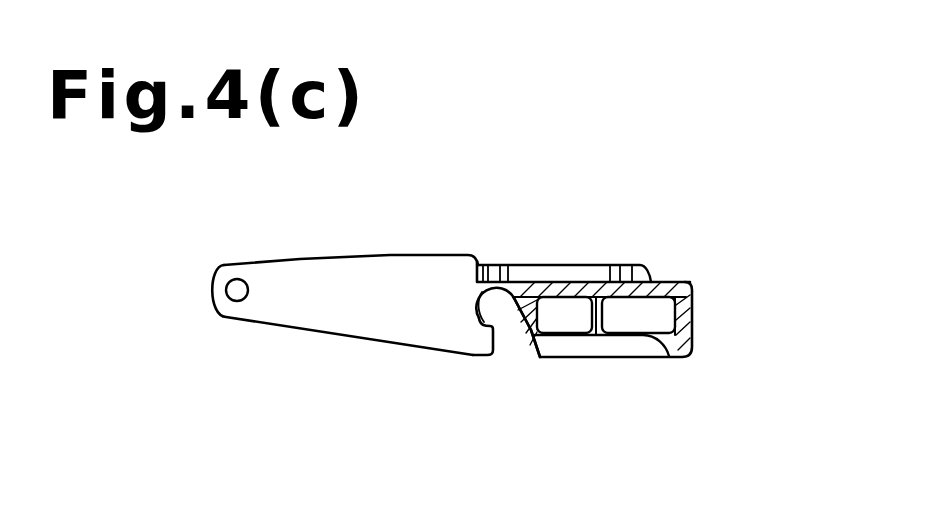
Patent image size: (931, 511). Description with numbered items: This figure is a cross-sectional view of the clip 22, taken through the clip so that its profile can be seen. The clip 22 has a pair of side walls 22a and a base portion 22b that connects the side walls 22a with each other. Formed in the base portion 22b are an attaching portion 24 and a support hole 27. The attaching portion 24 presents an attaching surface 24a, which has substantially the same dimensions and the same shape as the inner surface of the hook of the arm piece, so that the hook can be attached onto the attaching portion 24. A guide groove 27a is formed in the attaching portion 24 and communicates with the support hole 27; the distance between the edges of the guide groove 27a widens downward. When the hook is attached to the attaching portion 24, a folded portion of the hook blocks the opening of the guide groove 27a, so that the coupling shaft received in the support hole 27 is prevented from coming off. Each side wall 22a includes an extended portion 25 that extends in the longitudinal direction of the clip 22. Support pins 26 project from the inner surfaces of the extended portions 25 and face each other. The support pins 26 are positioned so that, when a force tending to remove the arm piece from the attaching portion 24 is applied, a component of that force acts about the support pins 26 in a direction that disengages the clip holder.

The clip 22 is at (688, 282).
The side wall 22a is at (348, 318).
The base portion 22b is at (692, 308).
The attaching portion 24 is at (535, 282).
The attaching surface 24a is at (472, 312).
The extended portion 25 is at (345, 262).
The support pin 26 is at (250, 292).
The support hole 27 is at (483, 326).
The guide groove 27a is at (531, 342).